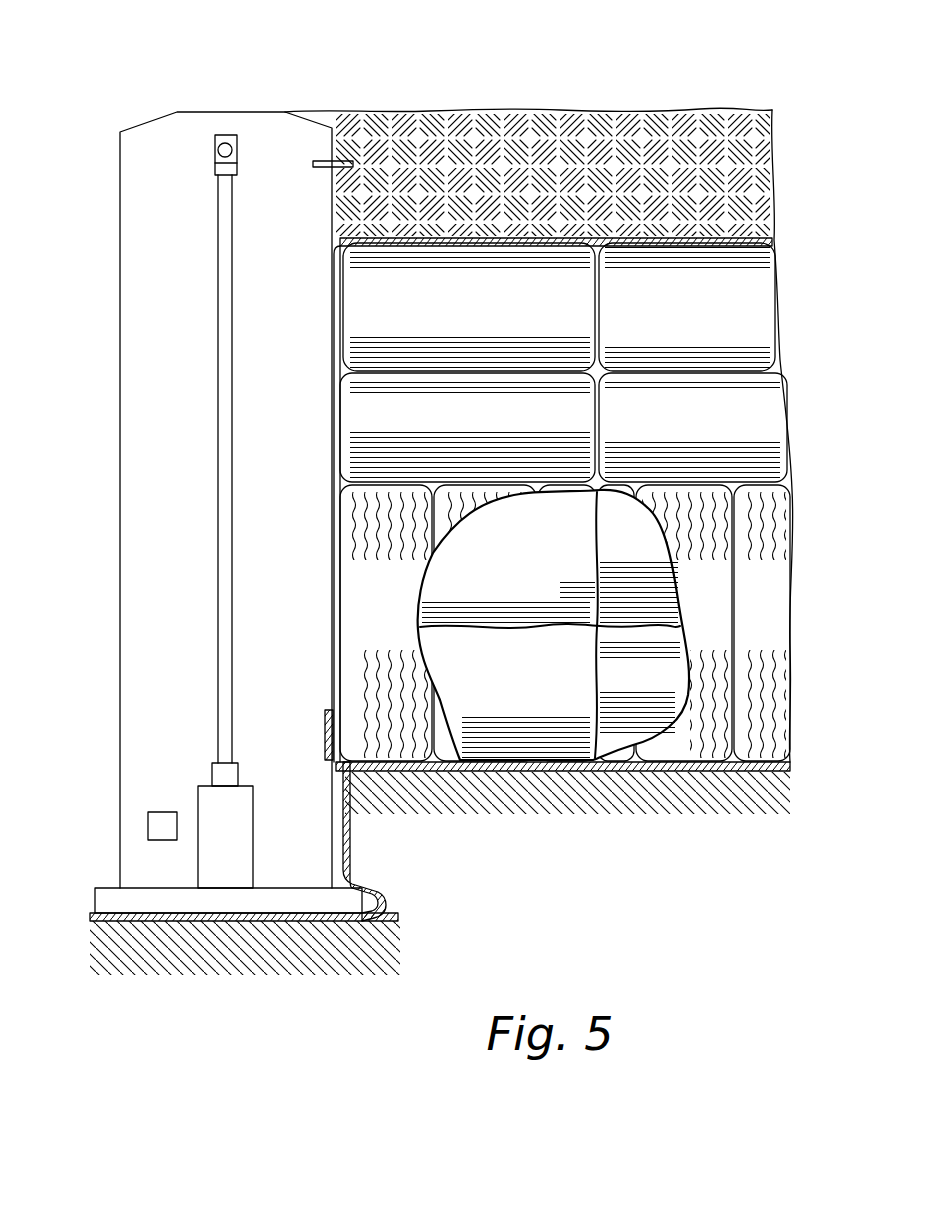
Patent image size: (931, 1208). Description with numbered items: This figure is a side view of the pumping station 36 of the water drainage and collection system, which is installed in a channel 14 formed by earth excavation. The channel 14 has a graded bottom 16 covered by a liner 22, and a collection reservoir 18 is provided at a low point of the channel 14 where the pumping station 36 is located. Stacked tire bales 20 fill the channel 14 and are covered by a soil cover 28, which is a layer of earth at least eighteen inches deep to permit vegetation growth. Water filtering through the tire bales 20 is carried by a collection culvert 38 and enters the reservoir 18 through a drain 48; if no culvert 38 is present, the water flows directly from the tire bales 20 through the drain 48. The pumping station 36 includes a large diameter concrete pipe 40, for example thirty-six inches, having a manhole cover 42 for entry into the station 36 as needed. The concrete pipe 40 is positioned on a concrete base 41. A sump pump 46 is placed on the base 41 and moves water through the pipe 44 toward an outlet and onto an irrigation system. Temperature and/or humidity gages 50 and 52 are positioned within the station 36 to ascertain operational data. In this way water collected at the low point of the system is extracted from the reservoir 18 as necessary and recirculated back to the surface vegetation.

The channel 14 is at (457, 172).
The bottom 16 is at (747, 710).
The collection reservoir 18 is at (343, 837).
The tire bales 20 is at (748, 270).
The liner 22 is at (527, 762).
The soil cover 28 is at (640, 142).
The pumping station 36 is at (245, 496).
The collection culvert 38 is at (673, 730).
The concrete pipe 40 is at (143, 218).
The concrete base 41 is at (350, 901).
The manhole cover 42 is at (230, 112).
The pipe 44 is at (220, 380).
The sump pump 46 is at (210, 798).
The drain 48 is at (334, 722).
The temperature and/or humidity gage 50 is at (148, 822).
The temperature and/or humidity gage 52 is at (352, 162).